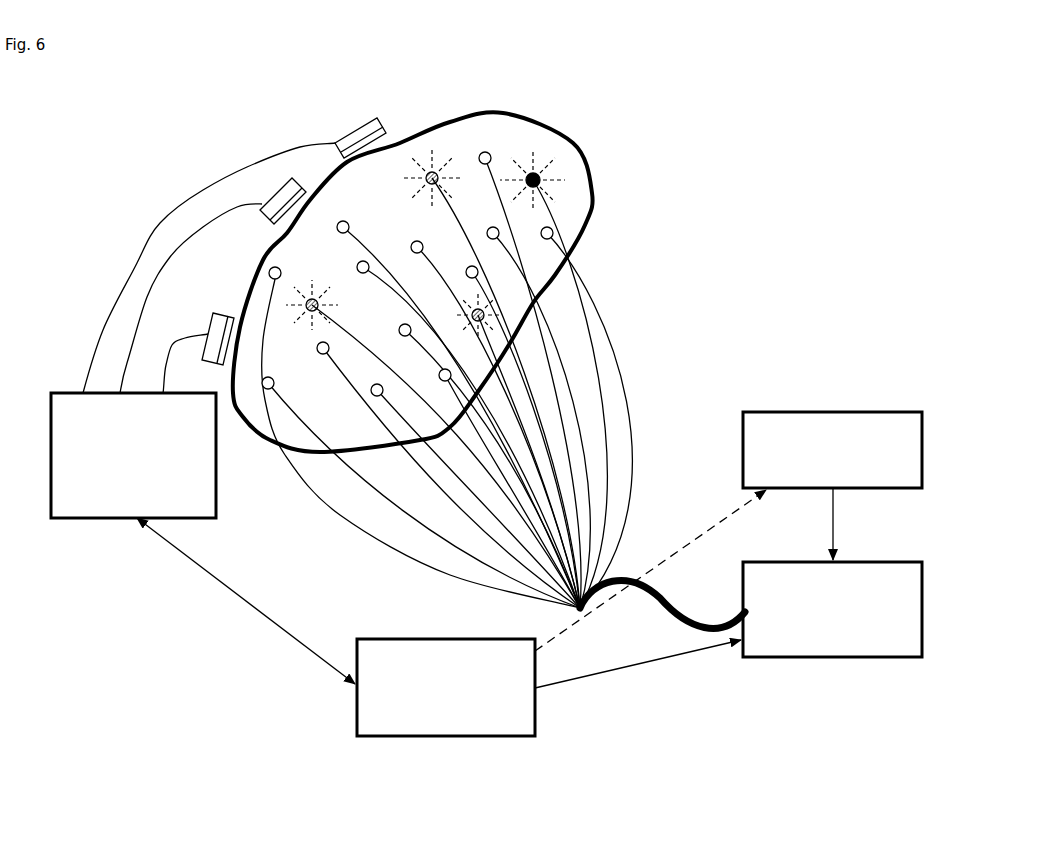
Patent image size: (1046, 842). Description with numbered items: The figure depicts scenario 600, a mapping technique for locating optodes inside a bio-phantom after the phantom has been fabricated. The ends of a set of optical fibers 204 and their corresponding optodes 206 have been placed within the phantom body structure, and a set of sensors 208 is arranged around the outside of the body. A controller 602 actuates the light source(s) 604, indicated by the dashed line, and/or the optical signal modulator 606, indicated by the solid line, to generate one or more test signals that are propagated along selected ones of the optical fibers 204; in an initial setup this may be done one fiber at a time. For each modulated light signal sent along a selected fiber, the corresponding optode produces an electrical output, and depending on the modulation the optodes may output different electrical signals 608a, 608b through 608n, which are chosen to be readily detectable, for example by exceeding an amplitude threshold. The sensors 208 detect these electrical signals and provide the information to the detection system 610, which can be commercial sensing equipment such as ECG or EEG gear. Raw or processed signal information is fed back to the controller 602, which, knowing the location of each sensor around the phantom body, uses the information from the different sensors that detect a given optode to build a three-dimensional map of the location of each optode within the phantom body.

The scenario 600 is at (70, 90).
The optical fibers 204 is at (634, 342).
The optodes 206 is at (491, 152).
The sensors 208 is at (377, 118).
The electrical signal 608a is at (562, 178).
The electrical signal 608b is at (443, 165).
The electrical signal 608n is at (293, 300).
The controller 602 is at (372, 639).
The light source(s) 604 is at (880, 412).
The optical signal modulator 606 is at (826, 658).
The detection system 610 is at (73, 519).